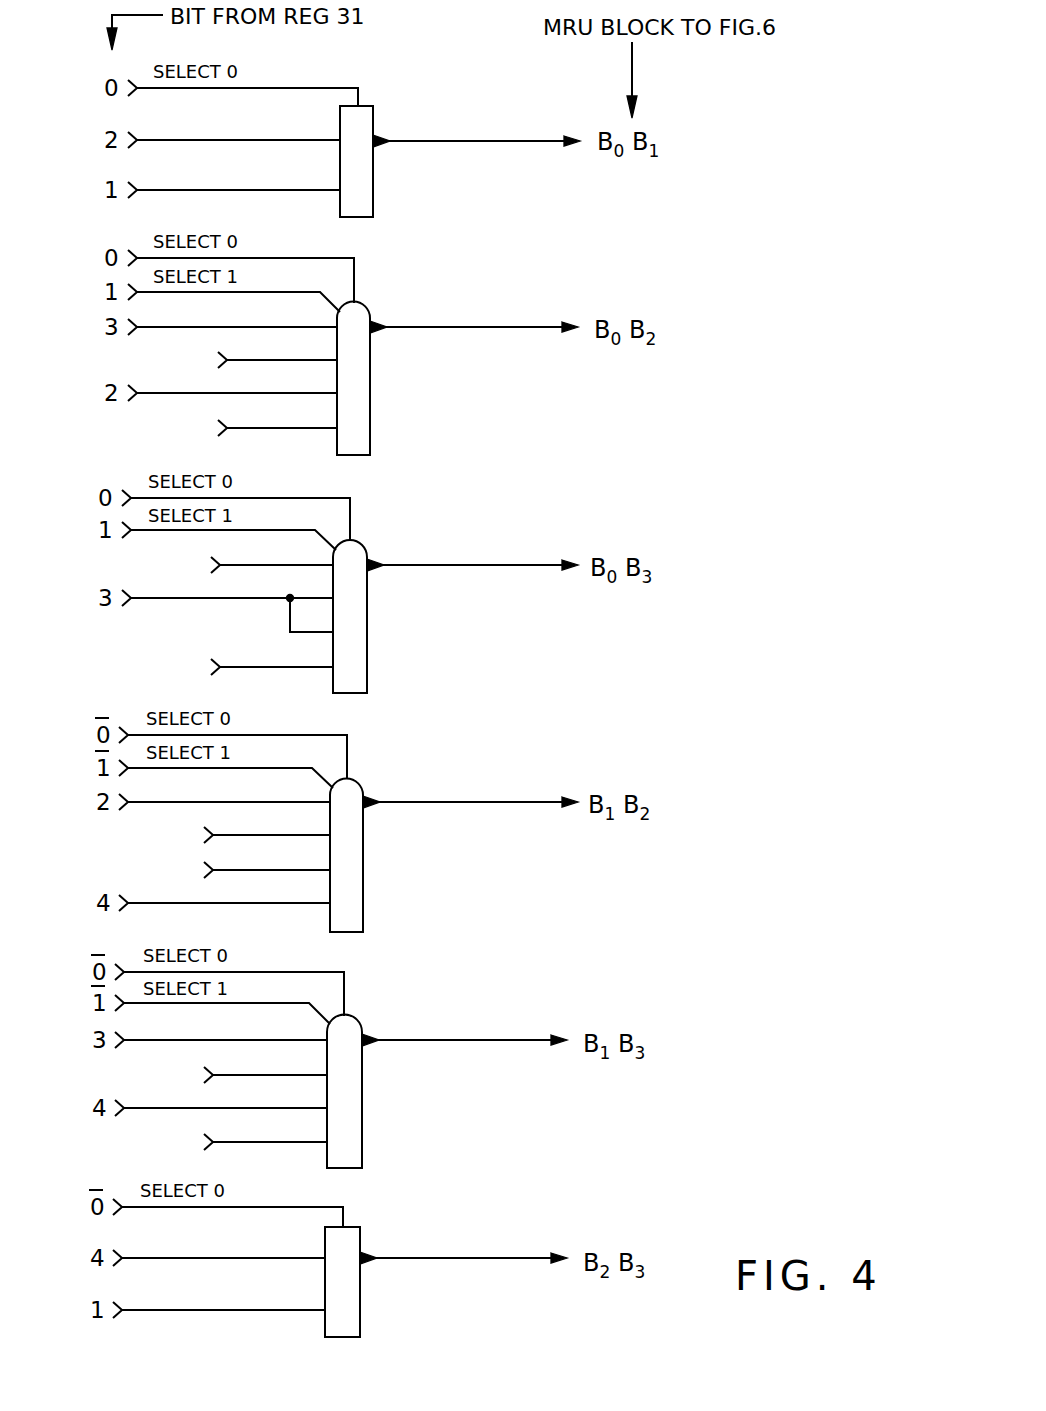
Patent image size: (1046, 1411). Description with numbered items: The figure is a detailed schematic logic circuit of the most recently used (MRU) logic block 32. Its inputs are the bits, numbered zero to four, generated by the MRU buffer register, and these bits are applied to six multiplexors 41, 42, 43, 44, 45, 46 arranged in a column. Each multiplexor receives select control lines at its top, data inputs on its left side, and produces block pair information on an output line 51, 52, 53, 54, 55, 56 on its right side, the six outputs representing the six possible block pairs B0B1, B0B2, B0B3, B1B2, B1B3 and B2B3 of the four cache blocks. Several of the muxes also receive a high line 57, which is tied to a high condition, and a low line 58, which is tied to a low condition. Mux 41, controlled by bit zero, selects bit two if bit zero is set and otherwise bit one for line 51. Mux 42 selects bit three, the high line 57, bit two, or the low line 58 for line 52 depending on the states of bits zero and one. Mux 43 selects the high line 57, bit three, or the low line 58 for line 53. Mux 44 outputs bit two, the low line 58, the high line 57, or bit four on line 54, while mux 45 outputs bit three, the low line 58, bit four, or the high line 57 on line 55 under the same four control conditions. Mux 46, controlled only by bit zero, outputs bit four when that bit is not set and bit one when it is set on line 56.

The most recently used (MRU) logic block 32 is at (805, 640).
The multiplexor 41 is at (376, 108).
The multiplexor 42 is at (373, 312).
The multiplexor 43 is at (370, 548).
The multiplexor 44 is at (364, 786).
The multiplexor 45 is at (365, 1022).
The multiplexor 46 is at (362, 1232).
The output line 51 is at (488, 148).
The output line 52 is at (495, 333).
The output line 53 is at (480, 570).
The output line 54 is at (478, 806).
The output line 55 is at (478, 1044).
The output line 56 is at (468, 1262).
The high line 57 is at (286, 360).
The low line 58 is at (286, 428).